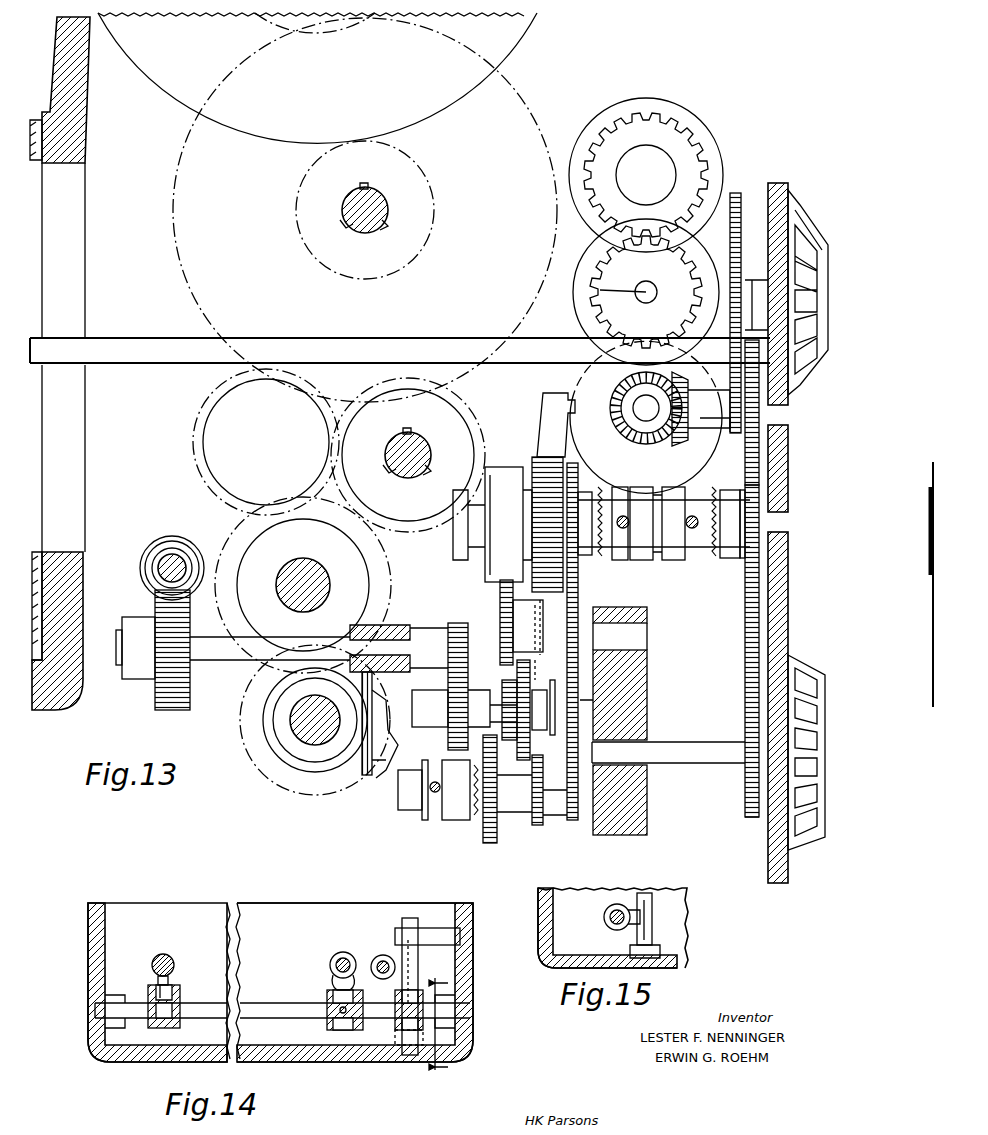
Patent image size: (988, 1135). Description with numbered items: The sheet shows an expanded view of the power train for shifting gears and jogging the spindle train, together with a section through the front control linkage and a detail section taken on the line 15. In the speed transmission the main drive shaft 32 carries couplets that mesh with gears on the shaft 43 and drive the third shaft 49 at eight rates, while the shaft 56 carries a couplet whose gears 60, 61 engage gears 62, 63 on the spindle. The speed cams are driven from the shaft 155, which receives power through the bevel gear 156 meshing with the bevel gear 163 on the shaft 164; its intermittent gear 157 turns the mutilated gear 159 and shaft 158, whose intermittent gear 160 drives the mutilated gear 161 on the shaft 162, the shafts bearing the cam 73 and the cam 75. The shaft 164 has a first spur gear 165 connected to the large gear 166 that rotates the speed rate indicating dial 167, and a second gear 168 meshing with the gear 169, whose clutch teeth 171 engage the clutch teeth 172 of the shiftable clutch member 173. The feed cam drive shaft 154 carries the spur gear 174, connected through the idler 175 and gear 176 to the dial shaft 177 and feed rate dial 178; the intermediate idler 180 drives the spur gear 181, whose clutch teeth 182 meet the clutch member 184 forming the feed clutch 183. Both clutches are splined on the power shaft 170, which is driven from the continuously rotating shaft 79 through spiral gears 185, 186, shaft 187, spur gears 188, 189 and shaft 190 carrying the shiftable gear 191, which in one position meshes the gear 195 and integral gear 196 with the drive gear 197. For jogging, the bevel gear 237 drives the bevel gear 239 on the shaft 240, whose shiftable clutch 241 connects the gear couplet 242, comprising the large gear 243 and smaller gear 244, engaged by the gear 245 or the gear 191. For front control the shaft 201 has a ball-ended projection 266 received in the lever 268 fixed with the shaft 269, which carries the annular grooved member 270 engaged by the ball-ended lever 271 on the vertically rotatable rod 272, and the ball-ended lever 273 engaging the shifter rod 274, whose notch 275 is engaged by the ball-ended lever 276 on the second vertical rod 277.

In FIG. 14, the section line 15 is at (445, 1024).
In FIG. 13, the main drive shaft 32 is at (300, 740).
In FIG. 13, the shaft 43 is at (310, 562).
In FIG. 13, the third shaft 49 is at (420, 443).
In FIG. 13, the shaft 56 is at (380, 210).
In FIG. 13, the gear 60 is at (402, 21).
In FIG. 13, the gear 61 is at (420, 165).
In FIG. 13, the gear 62 is at (258, 16).
In FIG. 13, the gear 63 is at (458, 99).
In FIG. 13, the control cam 73 is at (600, 265).
In FIG. 13, the cam 75 is at (712, 140).
In FIG. 13, the continuously rotating shaft 79 is at (172, 552).
In FIG. 13, the drive shaft for the feed rate control cams 154 is at (164, 332).
In FIG. 13, the shaft 155 is at (645, 408).
In FIG. 13, the bevel gear 156 is at (640, 418).
In FIG. 13, the intermittent gear 157 is at (682, 462).
In FIG. 13, the shaft 158 is at (620, 300).
In FIG. 13, the mutilated gear 159 is at (636, 292).
In FIG. 13, the intermittent gear 160 is at (580, 270).
In FIG. 13, the mutilated gear 161 is at (672, 132).
In FIG. 13, the shaft 162 is at (632, 158).
In FIG. 13, the bevel gear 163 is at (678, 445).
In FIG. 13, the shaft 164 is at (698, 420).
In FIG. 13, the first spur gear 165 is at (728, 432).
In FIG. 13, the large gear 166 is at (740, 192).
In FIG. 13, the speed rate indicating dial 167 is at (790, 200).
In FIG. 13, the second gear 168 is at (760, 428).
In FIG. 13, the gear 169 is at (745, 580).
In FIG. 13, the power shaft 170 is at (710, 560).
In FIG. 13, the clutch teeth 171 is at (730, 560).
In FIG. 13, the clutch teeth 172 is at (700, 560).
In FIG. 13, the shiftable clutch member 173 is at (640, 552).
In FIG. 13, the spur gear 174 is at (760, 380).
In FIG. 13, the idler 175 is at (744, 680).
In FIG. 13, the gear 176 is at (752, 818).
In FIG. 13, the dial shaft 177 is at (682, 742).
In FIG. 13, the feed rate dial 178 is at (812, 652).
In FIG. 13, the intermediate idler 180 is at (620, 680).
In FIG. 13, the spur gear 181 is at (552, 440).
In FIG. 13, the clutch teeth 182 is at (598, 560).
In FIG. 13, the feed clutch 183 is at (616, 560).
In FIG. 13, the clutch member 184 is at (640, 565).
In FIG. 13, the spiral gear 185 is at (145, 580).
In FIG. 13, the spiral gear 186 is at (155, 695).
In FIG. 13, the shaft 187 is at (212, 652).
In FIG. 13, the spur gear 188 is at (452, 622).
In FIG. 13, the spur gear 189 is at (452, 740).
In FIG. 13, the shaft 190 is at (538, 715).
In FIG. 13, the shiftable gear 191 is at (530, 745).
In FIG. 13, the gear 195 is at (500, 590).
In FIG. 13, the gear 196 is at (540, 612).
In FIG. 13, the drive gear 197 is at (532, 460).
In FIG. 14, the shaft 201 is at (152, 962).
In FIG. 13, the bevel gear 237 is at (330, 760).
In FIG. 13, the bevel gear 239 is at (368, 780).
In FIG. 13, the shaft 240 is at (410, 805).
In FIG. 13, the shiftable clutch 241 is at (450, 810).
In FIG. 13, the gear couplet 242 is at (530, 810).
In FIG. 13, the relatively large gear 243 is at (483, 826).
In FIG. 13, the relatively smaller gear 244 is at (560, 818).
In FIG. 13, the gear 245 is at (508, 740).
In FIG. 14, the ball-ended projection 266 is at (170, 975).
In FIG. 14, the lever 268 is at (145, 1030).
In FIG. 14, the shaft 269 is at (212, 1020).
In FIG. 15, the shaft 269 is at (604, 916).
In FIG. 14, the annular grooved member 270 is at (328, 1028).
In FIG. 14, the ball-ended lever 271 is at (333, 978).
In FIG. 14, the vertically rotatable rod 272 is at (340, 950).
In FIG. 14, the ball-ended lever 273 is at (395, 1028).
In FIG. 15, the ball-ended lever 273 is at (610, 928).
In FIG. 15, the shifter rod 274 is at (652, 935).
In FIG. 14, the notch 275 is at (420, 951).
In FIG. 14, the ball-ended lever 276 is at (398, 935).
In FIG. 14, the second vertical rod 277 is at (378, 956).